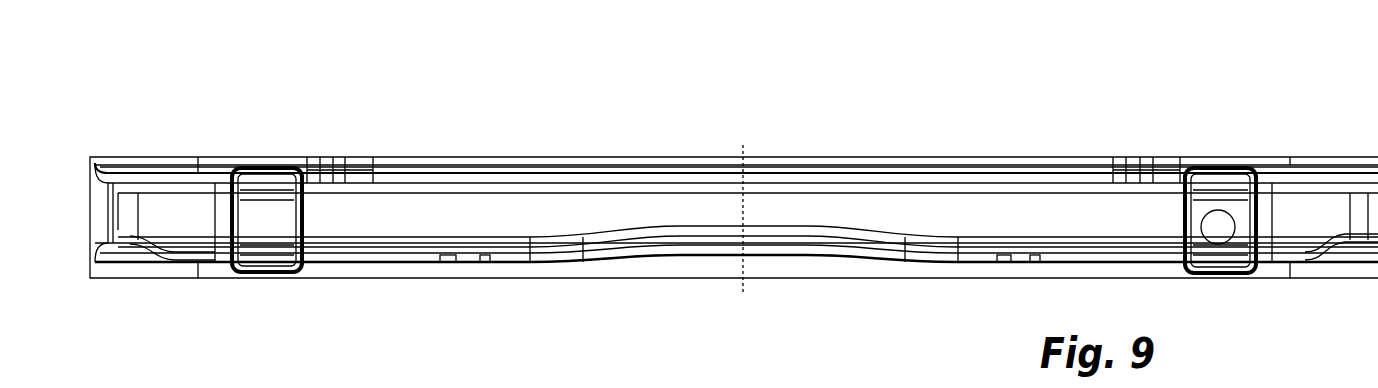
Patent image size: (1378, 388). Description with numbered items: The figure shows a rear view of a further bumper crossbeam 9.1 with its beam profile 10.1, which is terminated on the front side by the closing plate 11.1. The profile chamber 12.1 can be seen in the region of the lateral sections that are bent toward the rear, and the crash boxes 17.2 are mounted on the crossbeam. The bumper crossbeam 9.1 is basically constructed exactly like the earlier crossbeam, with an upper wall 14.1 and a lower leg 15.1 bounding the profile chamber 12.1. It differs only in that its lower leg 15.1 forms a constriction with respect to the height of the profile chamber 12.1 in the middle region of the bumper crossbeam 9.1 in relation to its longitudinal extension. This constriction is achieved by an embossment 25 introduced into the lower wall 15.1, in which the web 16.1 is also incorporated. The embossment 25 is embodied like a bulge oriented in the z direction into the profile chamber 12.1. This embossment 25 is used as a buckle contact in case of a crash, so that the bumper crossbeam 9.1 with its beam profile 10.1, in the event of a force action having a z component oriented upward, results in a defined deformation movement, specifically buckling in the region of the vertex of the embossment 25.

The bumper crossbeam 9.1 is at (363, 127).
The beam profile 10.1 is at (917, 160).
The upper wall 14.1 is at (435, 170).
The web 16.1 is at (575, 227).
The embossment 25 is at (728, 250).
The lower leg 15.1 is at (440, 252).
The closing plate 11.1 is at (837, 268).
The profile chamber 12.1 is at (100, 215).
The crash box 17.2 is at (1205, 167).